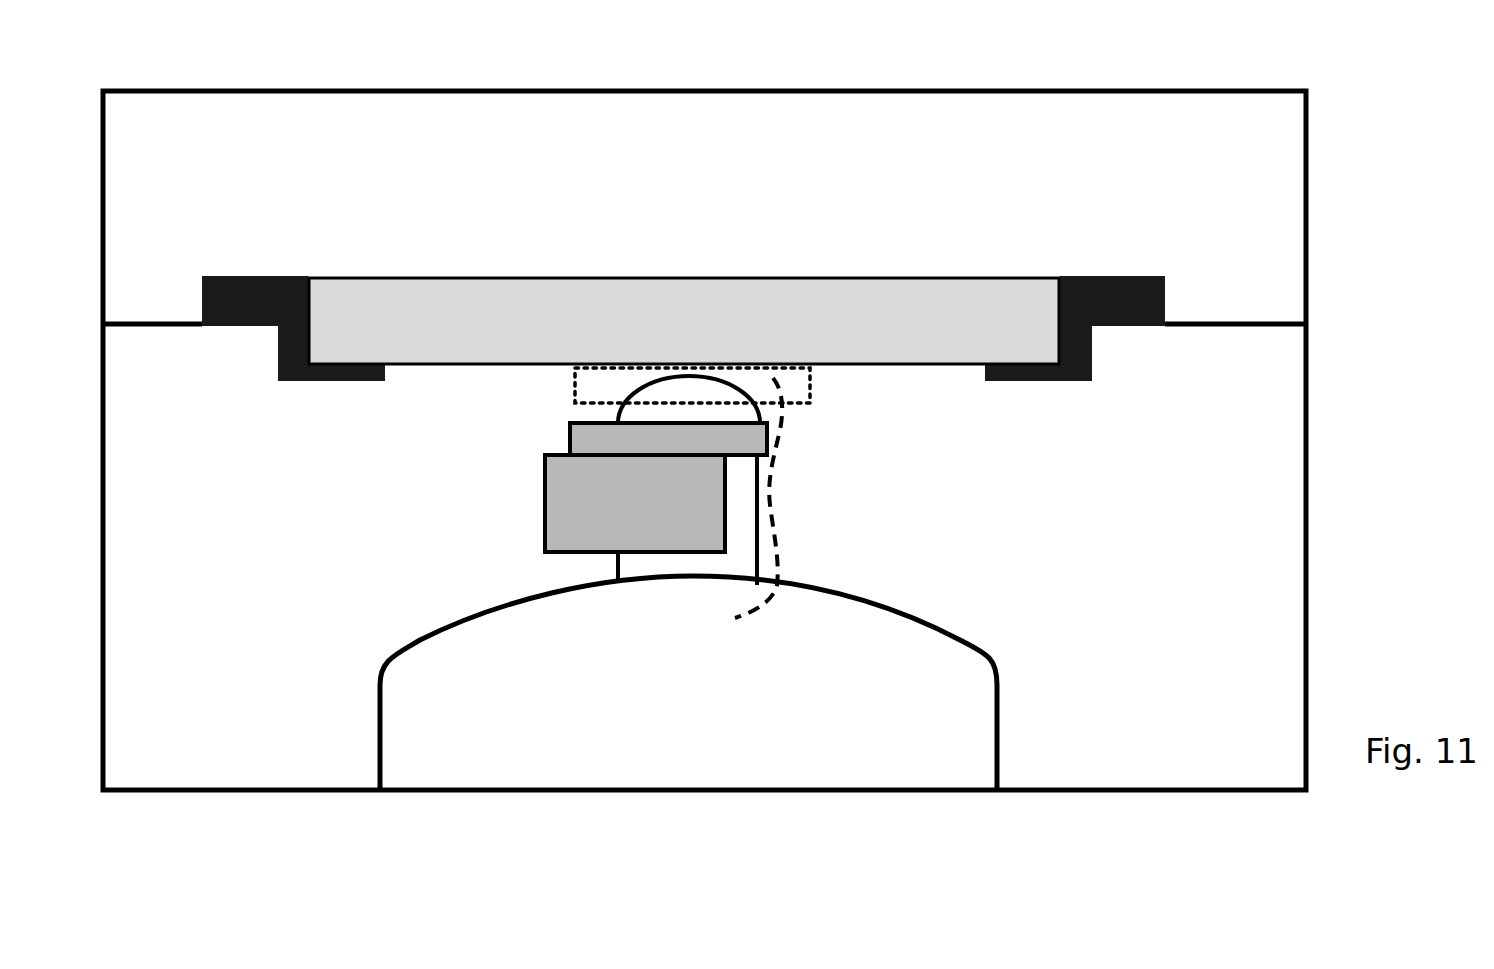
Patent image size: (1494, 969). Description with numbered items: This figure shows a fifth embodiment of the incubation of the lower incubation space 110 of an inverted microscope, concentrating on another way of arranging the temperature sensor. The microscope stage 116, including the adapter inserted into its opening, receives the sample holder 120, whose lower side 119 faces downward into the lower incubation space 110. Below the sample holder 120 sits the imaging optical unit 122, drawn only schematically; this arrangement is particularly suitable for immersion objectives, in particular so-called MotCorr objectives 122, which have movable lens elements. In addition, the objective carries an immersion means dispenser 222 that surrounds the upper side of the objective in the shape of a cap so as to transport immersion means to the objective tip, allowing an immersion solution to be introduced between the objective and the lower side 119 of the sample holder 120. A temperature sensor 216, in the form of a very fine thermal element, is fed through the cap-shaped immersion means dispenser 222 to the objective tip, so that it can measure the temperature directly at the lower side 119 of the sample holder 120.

The lower incubation space 110 is at (523, 133).
The microscope stage 116 is at (135, 320).
The lower side of the sample holder 119 is at (412, 367).
The sample holder 120 is at (337, 280).
The imaging optical unit 122 is at (740, 498).
The temperature sensor 216 is at (780, 555).
The immersion means dispenser 222 is at (810, 385).